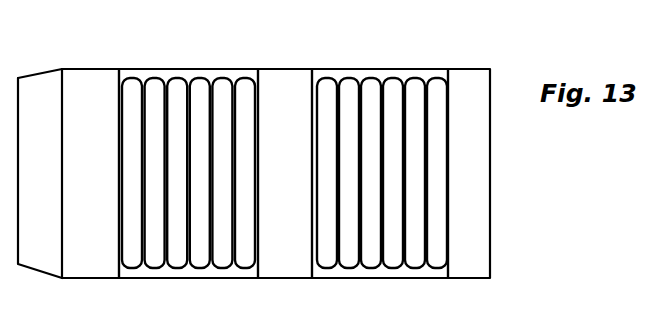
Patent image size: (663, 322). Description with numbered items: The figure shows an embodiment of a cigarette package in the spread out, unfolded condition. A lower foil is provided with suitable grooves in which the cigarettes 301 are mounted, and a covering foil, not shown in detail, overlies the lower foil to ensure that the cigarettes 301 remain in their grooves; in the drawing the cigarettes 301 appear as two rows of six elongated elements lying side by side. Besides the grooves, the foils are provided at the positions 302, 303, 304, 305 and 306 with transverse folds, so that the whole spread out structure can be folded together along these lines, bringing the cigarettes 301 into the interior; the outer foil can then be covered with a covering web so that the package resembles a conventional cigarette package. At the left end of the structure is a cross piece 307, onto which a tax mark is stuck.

The cigarettes 301 is at (132, 80).
The transverse fold position 302 is at (62, 128).
The transverse fold position 303 is at (119, 218).
The transverse fold position 304 is at (258, 162).
The transverse fold position 305 is at (312, 207).
The transverse fold position 306 is at (450, 206).
The cross piece 307 is at (38, 258).